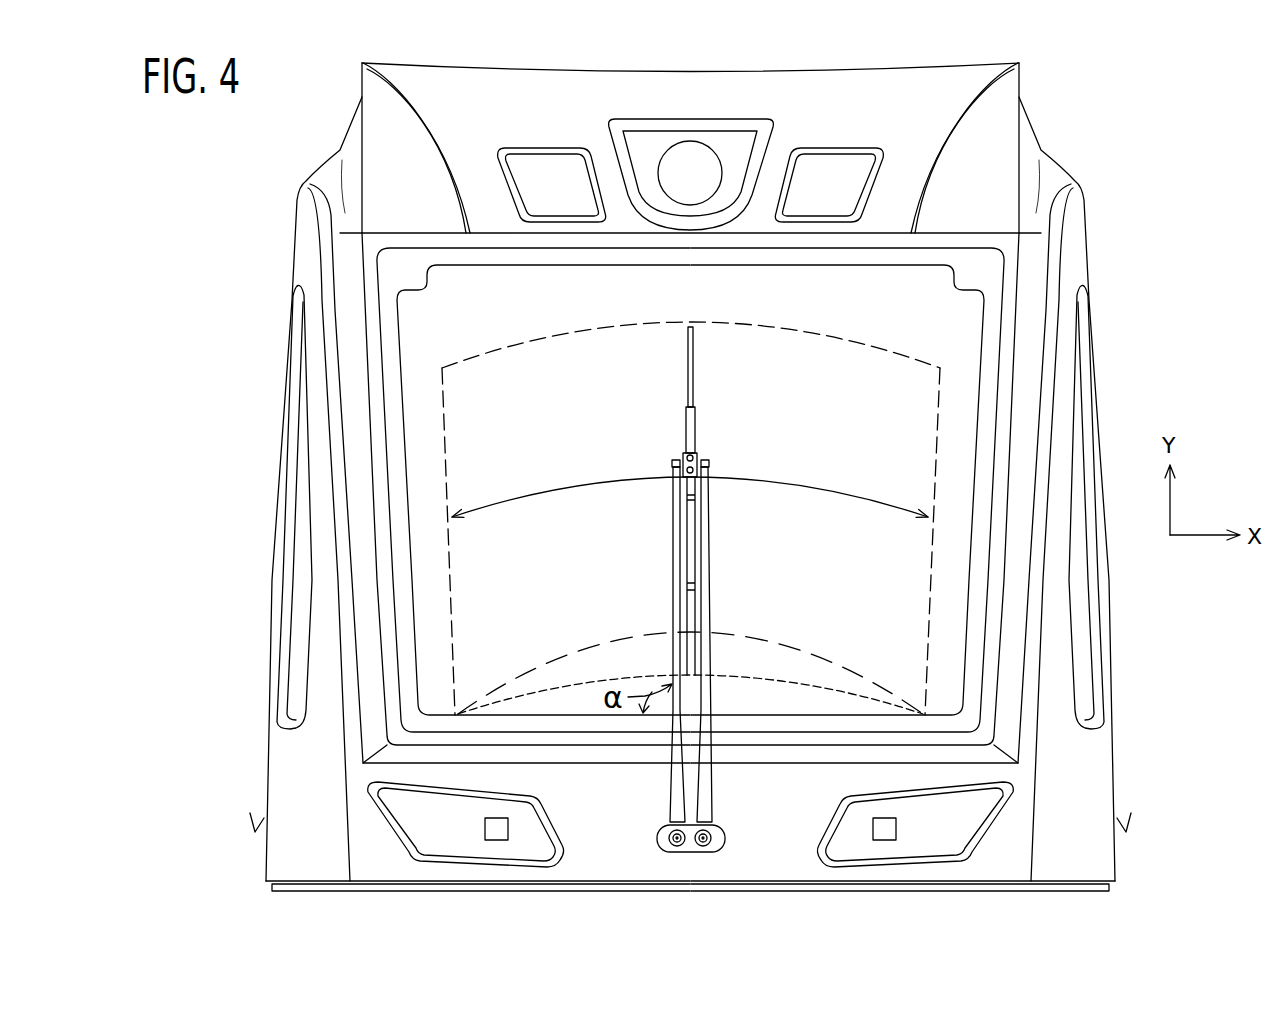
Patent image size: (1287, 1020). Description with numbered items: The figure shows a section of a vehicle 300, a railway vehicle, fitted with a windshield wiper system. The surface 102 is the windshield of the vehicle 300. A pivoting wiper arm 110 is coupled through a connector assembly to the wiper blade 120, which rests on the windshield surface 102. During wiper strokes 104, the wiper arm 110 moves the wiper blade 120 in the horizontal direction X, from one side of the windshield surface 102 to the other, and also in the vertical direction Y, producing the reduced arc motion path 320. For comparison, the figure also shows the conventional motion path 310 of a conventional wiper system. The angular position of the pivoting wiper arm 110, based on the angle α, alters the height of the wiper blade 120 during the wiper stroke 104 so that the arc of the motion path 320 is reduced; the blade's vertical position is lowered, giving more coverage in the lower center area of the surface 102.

The vehicle 300 is at (1037, 130).
The surface 102 is at (912, 313).
The wiper blade 120 is at (693, 377).
The pivoting wiper arm 110 is at (707, 548).
The wiper stroke 104 is at (830, 490).
The conventional motion path 310 is at (822, 655).
The reduced arc motion path 320 is at (570, 655).